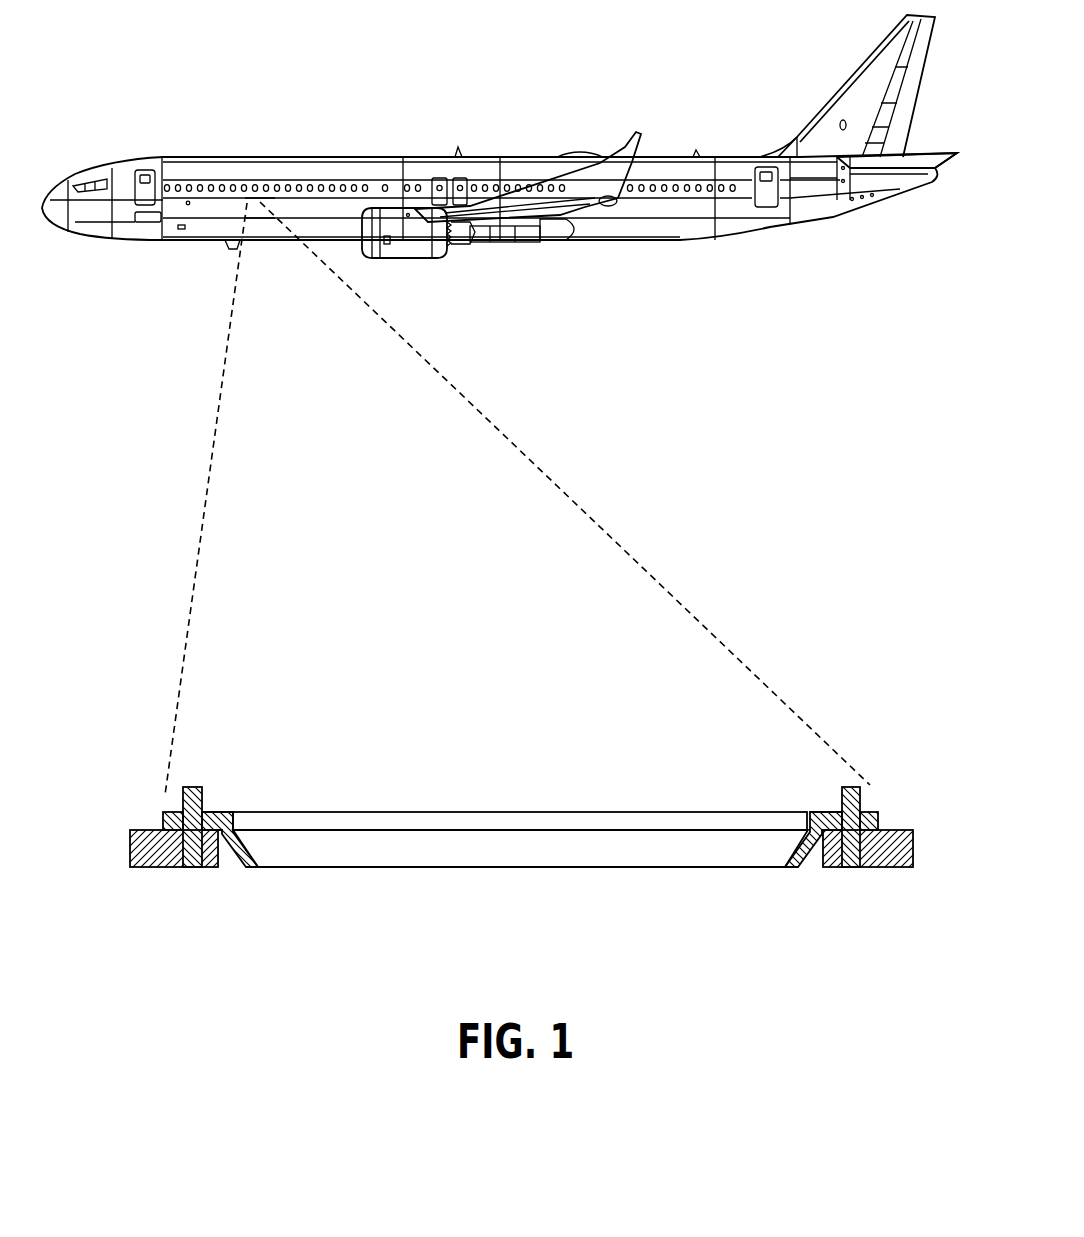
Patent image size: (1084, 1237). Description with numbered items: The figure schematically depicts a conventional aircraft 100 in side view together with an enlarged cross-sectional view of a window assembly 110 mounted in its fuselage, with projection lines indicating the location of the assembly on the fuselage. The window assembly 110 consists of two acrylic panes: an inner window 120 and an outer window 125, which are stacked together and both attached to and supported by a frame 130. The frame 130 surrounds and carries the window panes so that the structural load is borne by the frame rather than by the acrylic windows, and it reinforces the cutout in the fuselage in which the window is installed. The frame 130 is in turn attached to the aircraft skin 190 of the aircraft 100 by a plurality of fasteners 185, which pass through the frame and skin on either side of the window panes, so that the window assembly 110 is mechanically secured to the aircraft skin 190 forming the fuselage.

The aircraft 100 is at (223, 87).
The window assembly 110 is at (260, 213).
The inner window 120 is at (468, 868).
The outer window 125 is at (475, 807).
The frame 130 is at (803, 870).
The fasteners 185 is at (207, 790).
The aircraft skin 190 is at (165, 870).